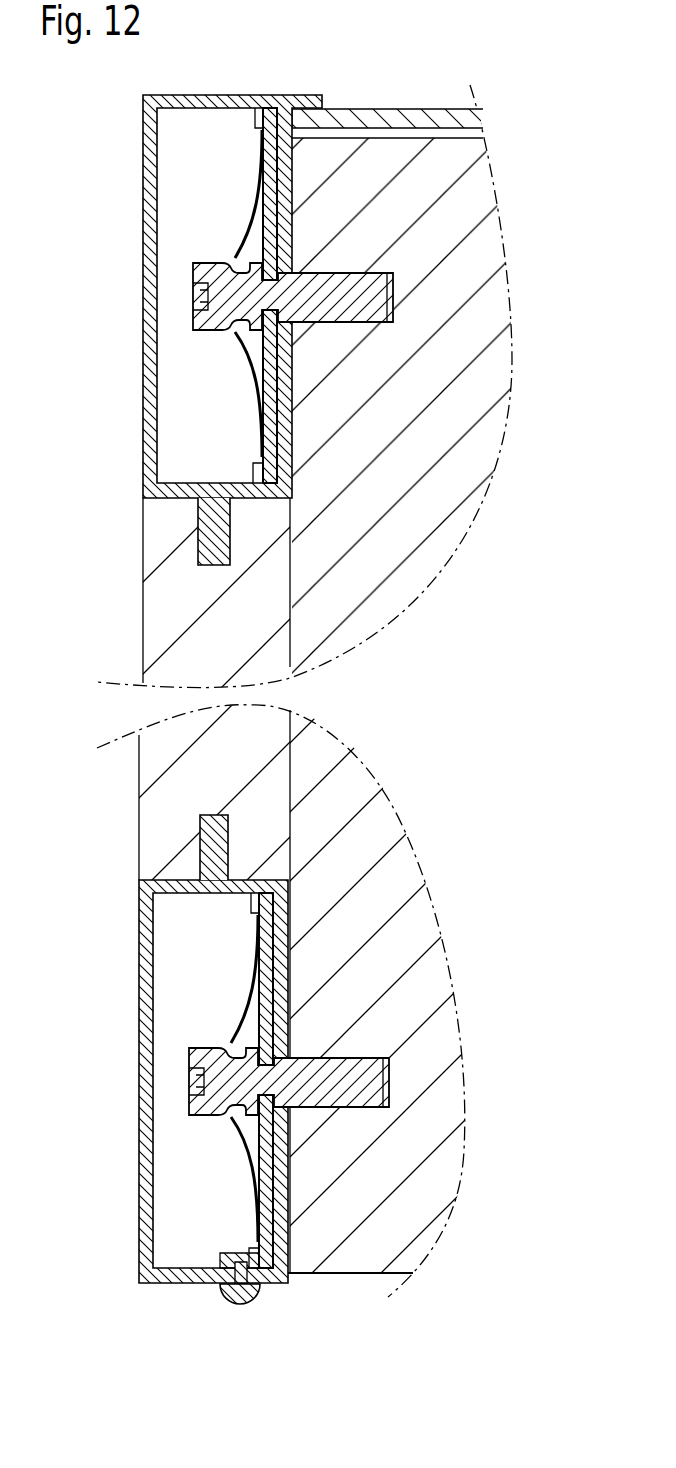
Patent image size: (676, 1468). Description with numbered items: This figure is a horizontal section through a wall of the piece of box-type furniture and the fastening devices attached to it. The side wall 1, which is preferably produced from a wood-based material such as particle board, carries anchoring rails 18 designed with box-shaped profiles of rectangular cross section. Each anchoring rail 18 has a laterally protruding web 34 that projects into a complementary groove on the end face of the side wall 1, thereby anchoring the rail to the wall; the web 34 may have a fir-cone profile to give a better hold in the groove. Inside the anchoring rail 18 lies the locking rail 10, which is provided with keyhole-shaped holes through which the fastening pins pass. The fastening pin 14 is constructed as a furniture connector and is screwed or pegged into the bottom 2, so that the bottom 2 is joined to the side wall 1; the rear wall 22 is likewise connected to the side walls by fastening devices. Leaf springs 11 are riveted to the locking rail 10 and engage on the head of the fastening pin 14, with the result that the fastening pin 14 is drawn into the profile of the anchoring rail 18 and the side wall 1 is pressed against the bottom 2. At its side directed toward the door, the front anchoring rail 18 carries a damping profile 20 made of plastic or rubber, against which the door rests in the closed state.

The side wall 1 is at (178, 602).
The bottom 2 is at (440, 232).
The locking rail 10 is at (290, 217).
The leaf spring 11 is at (245, 235).
The fastening pin 14 is at (372, 298).
The anchoring rail 18 is at (135, 297).
The damping profile 20 is at (228, 1297).
The rear wall 22 is at (465, 119).
The web 34 is at (218, 542).